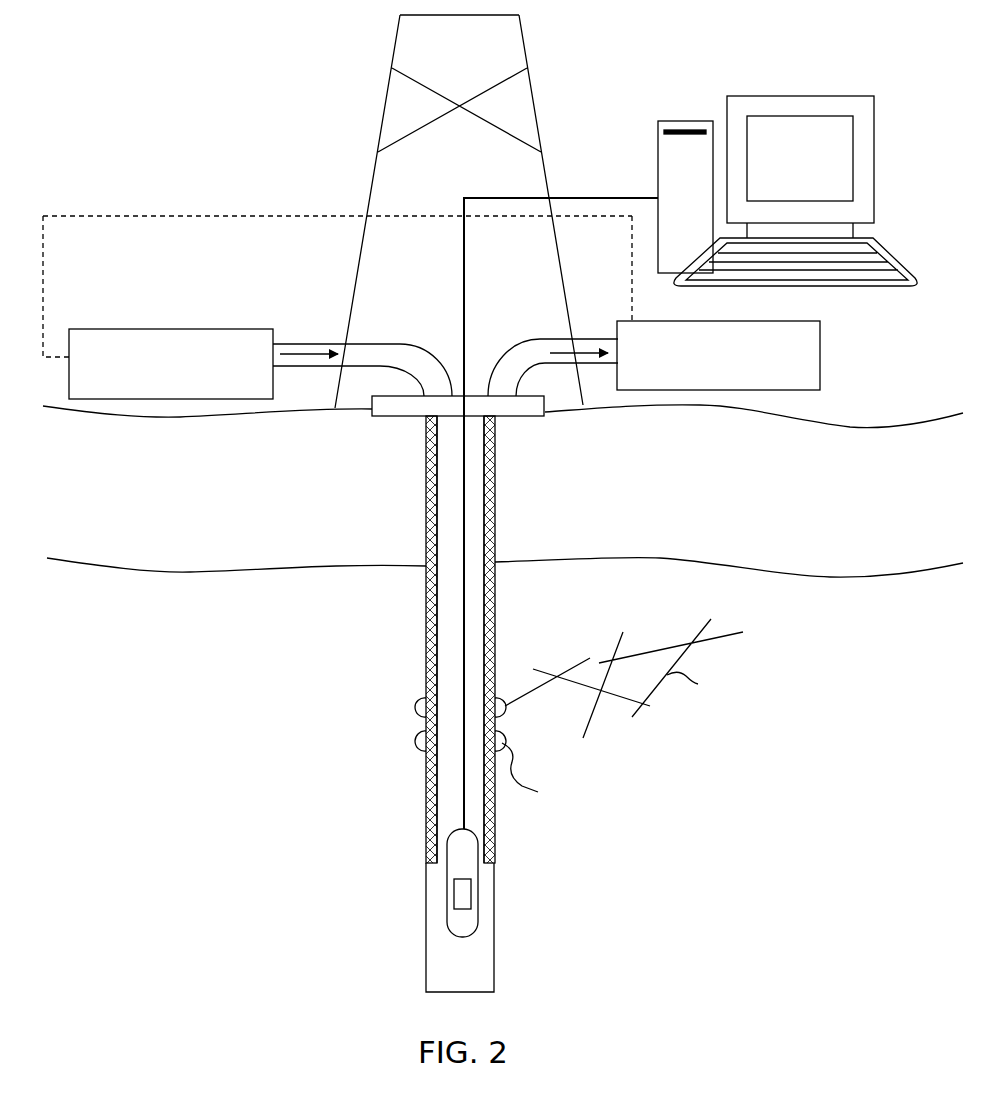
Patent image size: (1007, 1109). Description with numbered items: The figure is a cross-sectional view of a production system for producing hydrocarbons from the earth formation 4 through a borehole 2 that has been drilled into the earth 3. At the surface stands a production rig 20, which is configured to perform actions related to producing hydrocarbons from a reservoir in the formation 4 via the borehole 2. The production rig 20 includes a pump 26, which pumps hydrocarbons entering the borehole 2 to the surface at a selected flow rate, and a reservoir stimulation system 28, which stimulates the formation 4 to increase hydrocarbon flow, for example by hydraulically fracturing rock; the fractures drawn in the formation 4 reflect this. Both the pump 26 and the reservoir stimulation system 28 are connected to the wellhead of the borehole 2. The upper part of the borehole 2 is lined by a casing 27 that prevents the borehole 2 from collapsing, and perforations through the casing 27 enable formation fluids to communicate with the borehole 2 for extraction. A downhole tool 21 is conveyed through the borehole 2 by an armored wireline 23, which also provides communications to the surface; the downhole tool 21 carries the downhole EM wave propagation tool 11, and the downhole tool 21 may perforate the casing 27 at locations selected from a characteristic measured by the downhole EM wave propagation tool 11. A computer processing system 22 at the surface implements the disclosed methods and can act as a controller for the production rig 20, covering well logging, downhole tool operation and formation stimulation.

The production rig 20 is at (320, 150).
The computer processing system 22 is at (658, 135).
The reservoir stimulation system 28 is at (260, 364).
The pump 26 is at (654, 358).
The earth 3 is at (503, 430).
The borehole 2 is at (450, 483).
The casing 27 is at (432, 532).
The earth formation 4 is at (505, 647).
The armored wireline 23 is at (463, 648).
The downhole tool 21 is at (455, 843).
The downhole EM wave propagation tool 11 is at (462, 902).